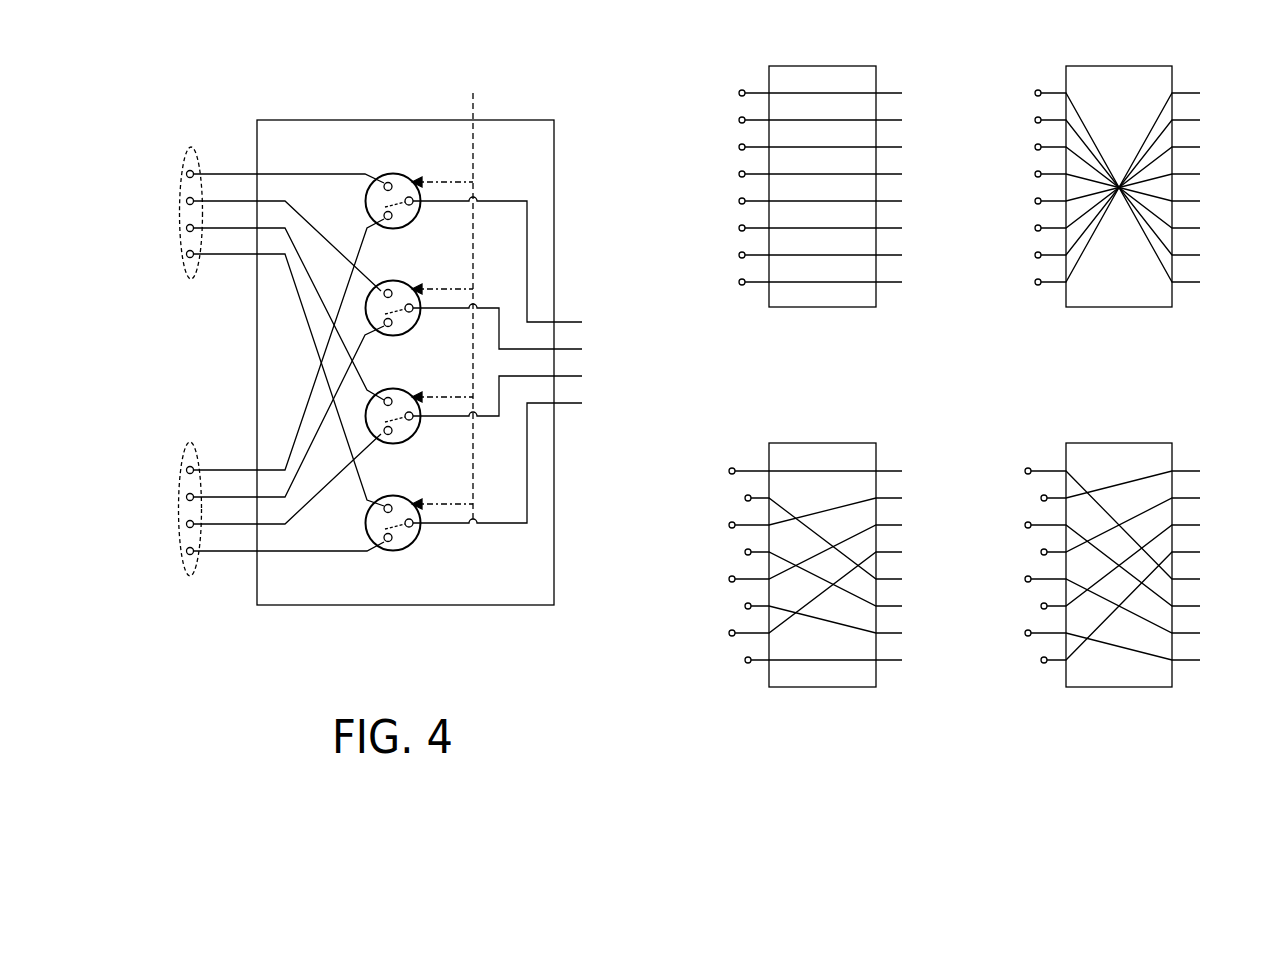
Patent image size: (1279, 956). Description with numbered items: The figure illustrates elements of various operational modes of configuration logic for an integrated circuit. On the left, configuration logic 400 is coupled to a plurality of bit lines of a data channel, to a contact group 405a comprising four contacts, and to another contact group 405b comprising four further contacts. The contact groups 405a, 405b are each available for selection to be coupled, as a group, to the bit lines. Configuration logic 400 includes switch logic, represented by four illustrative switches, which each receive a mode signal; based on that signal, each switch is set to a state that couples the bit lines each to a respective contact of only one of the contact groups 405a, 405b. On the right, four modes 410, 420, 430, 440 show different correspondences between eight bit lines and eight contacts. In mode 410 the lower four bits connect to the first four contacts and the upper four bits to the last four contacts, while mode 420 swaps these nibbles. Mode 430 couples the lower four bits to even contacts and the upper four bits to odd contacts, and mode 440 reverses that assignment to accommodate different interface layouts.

The configuration logic 400 is at (527, 594).
The contact group 405a is at (197, 150).
The contact group 405b is at (197, 447).
The mode 410 is at (805, 61).
The mode 420 is at (1101, 61).
The mode 430 is at (805, 440).
The mode 440 is at (1101, 440).